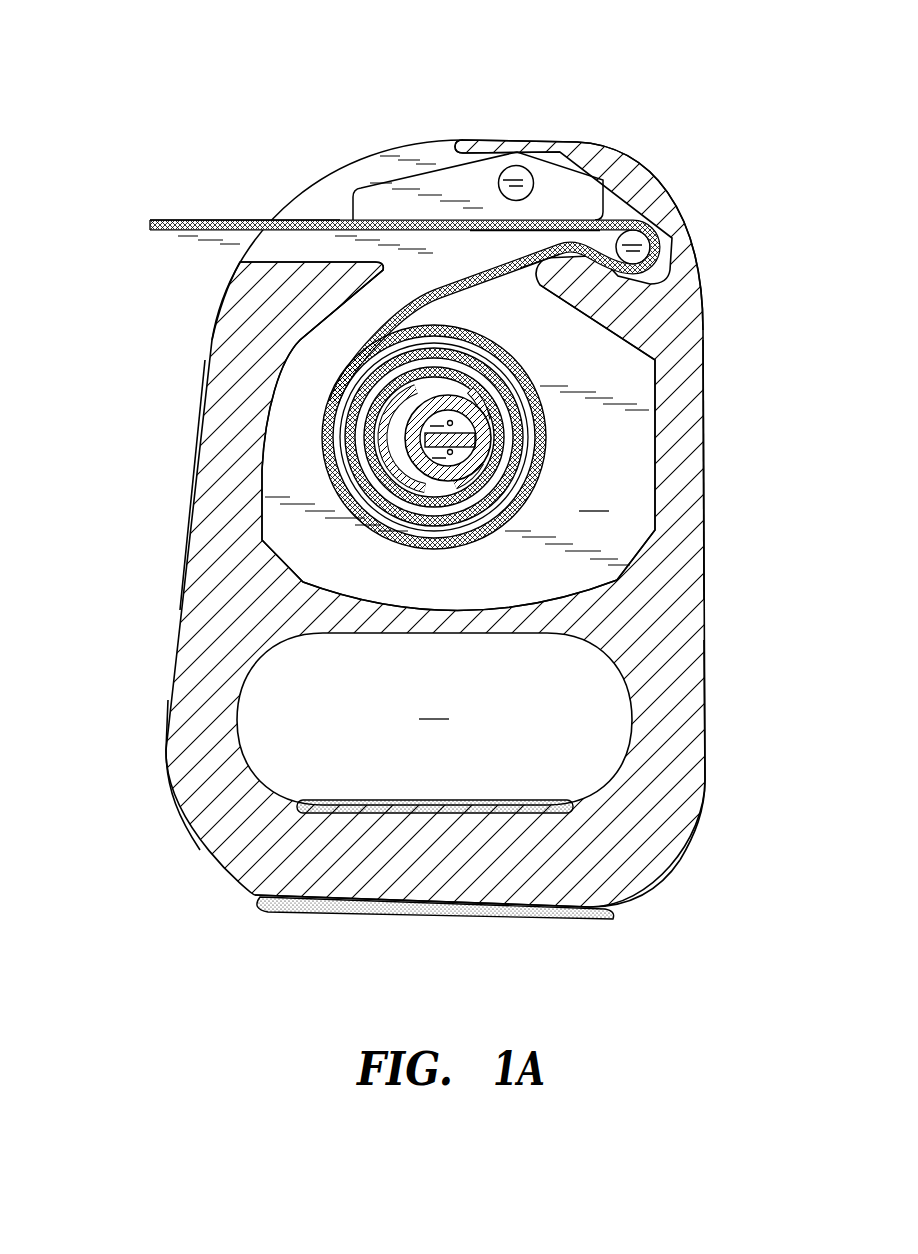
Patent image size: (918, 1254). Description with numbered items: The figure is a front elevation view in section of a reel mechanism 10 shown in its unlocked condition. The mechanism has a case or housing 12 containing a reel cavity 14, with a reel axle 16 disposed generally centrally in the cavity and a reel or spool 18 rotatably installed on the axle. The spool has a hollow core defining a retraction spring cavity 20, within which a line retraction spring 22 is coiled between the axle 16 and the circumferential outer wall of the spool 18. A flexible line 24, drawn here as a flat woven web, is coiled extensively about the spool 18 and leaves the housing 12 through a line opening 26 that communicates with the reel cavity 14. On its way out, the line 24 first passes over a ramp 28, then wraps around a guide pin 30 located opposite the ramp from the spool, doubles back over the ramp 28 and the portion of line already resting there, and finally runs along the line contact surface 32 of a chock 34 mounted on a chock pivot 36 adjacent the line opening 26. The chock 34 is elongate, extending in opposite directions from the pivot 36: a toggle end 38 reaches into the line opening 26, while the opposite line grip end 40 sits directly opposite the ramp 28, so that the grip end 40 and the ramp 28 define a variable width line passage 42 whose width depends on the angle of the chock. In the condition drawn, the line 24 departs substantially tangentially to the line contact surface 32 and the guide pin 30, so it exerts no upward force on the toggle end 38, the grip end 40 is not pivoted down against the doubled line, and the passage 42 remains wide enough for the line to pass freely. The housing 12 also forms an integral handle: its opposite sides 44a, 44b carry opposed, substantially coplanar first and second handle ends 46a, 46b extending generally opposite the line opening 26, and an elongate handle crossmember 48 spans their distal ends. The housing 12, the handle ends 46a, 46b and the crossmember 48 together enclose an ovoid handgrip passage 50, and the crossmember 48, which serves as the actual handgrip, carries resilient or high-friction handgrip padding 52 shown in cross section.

The reel mechanism 10 is at (459, 559).
The case or housing 12 is at (190, 482).
The reel cavity 14 is at (458, 440).
The reel axle 16 is at (537, 433).
The reel or spool 18 is at (330, 475).
The retraction spring cavity 20 is at (330, 402).
The line retraction spring 22 is at (513, 363).
The flexible line 24 is at (202, 232).
The line opening 26 is at (293, 212).
The ramp 28 is at (530, 252).
The guide pin 30 is at (688, 192).
The line contact surface 32 is at (388, 265).
The chock 34 is at (432, 148).
The chock pivot 36 is at (520, 173).
The toggle end 38 is at (353, 190).
The line grip end 40 is at (607, 200).
The variable width line passage 42 is at (540, 236).
The first side of housing 44a is at (202, 393).
The second side of housing 44b is at (705, 415).
The first handle end 46a is at (165, 737).
The second handle end 46b is at (705, 695).
The handle crossmember 48 is at (657, 843).
The ovoid handgrip passage 50 is at (434, 719).
The handgrip padding 52 is at (592, 915).